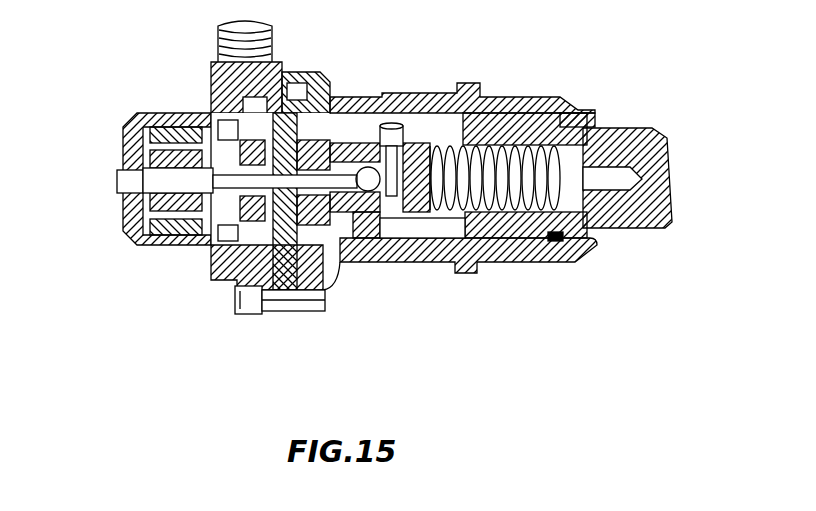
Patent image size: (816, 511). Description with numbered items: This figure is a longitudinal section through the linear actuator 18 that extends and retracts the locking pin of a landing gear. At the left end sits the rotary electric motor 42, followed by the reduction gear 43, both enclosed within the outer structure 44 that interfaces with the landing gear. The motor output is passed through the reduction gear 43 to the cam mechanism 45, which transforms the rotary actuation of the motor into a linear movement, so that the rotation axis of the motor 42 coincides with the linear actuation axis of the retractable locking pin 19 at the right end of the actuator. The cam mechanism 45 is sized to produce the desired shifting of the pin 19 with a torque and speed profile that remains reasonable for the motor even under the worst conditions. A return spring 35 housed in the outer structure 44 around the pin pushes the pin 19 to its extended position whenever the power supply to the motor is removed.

The valve assembly 18 is at (214, 307).
The retractable locking pin 19 is at (625, 130).
The return spring 35 is at (513, 143).
The rotary electric motor 42 is at (168, 113).
The reduction gear 43 is at (258, 140).
The outer structure 44 is at (337, 262).
The cam mechanism 45 is at (398, 126).